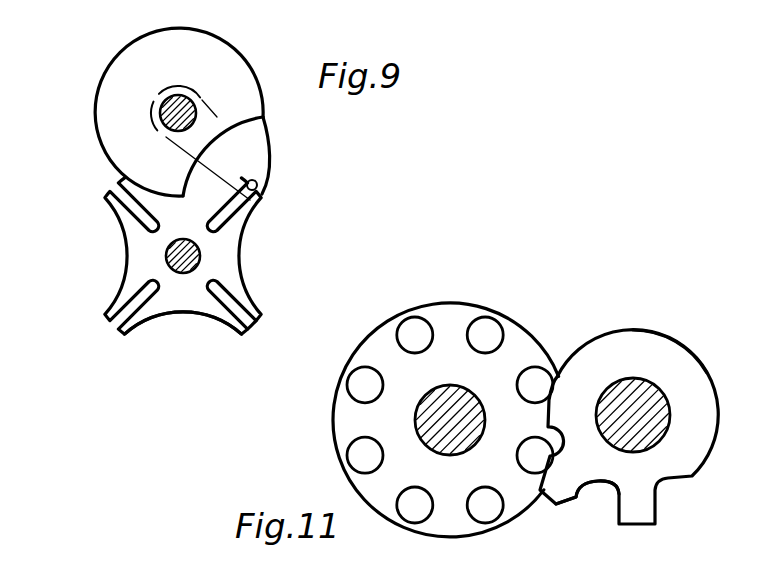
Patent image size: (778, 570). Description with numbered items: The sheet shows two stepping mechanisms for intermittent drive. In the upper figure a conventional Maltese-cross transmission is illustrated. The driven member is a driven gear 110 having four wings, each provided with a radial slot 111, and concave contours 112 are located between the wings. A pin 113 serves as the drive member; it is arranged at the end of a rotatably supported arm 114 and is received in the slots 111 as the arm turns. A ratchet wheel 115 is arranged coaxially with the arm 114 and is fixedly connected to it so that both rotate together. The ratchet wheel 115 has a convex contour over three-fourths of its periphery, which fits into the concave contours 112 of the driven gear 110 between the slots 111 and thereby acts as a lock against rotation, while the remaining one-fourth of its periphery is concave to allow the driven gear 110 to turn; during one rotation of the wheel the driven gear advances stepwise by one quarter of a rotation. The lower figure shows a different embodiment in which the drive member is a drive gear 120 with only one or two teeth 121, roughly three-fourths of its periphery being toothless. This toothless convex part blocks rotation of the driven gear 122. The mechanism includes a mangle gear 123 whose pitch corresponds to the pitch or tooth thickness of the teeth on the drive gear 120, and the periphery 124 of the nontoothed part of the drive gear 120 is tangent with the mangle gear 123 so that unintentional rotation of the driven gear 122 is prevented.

In FIG. 9, the driven gear 110 is at (140, 255).
In FIG. 9, the radial slot 111 is at (248, 322).
In FIG. 9, the concave contours 112 is at (196, 314).
In FIG. 9, the pin 113 is at (258, 185).
In FIG. 9, the arm 114 is at (240, 158).
In FIG. 9, the ratchet wheel 115 is at (112, 135).
In FIG. 11, the drive gear 120 is at (692, 480).
In FIG. 11, the teeth 121 is at (575, 483).
In FIG. 11, the driven gear 122 is at (518, 343).
In FIG. 11, the mangle gear 123 is at (482, 320).
In FIG. 11, the periphery 124 is at (682, 322).